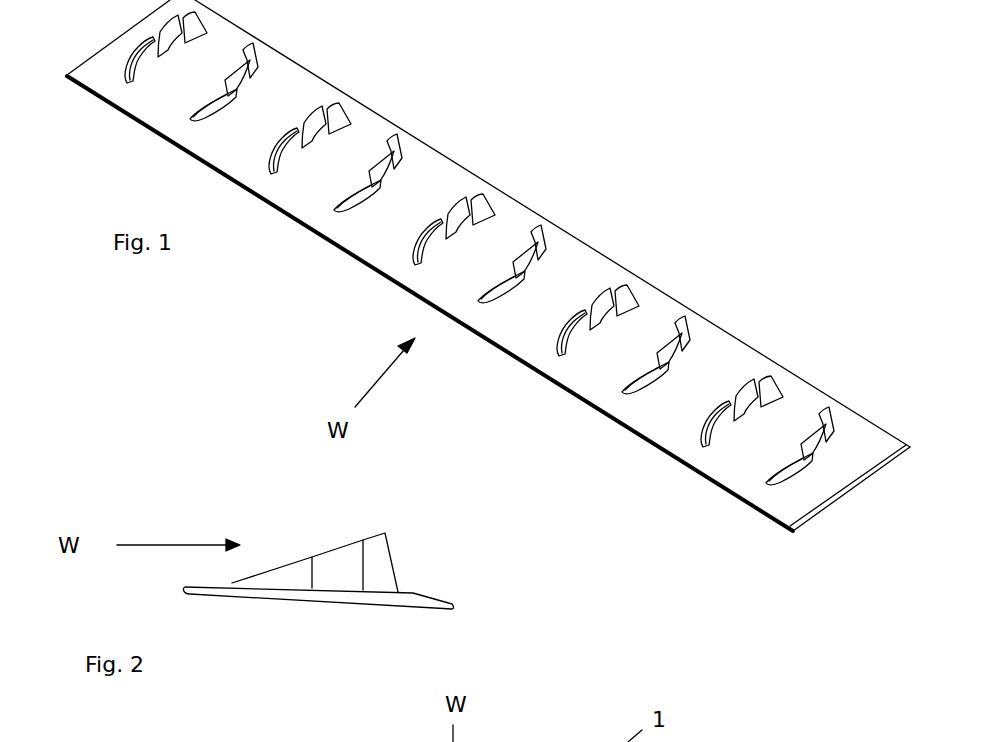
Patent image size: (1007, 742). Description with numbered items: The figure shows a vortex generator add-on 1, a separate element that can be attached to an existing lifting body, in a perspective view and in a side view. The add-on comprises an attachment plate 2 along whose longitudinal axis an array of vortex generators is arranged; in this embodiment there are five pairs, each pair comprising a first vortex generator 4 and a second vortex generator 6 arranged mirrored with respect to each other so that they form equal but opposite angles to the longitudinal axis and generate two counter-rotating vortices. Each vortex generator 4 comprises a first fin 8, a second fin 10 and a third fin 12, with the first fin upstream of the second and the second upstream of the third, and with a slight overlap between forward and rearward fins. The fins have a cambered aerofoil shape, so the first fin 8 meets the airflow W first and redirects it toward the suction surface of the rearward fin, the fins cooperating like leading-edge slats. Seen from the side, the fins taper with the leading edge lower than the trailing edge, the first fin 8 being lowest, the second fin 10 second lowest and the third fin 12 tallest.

In FIG. 1, the vortex generator add-on 1 is at (501, 265).
In FIG. 2, the vortex generator add-on 1 is at (357, 562).
In FIG. 1, the attachment plate 2 is at (740, 347).
In FIG. 2, the attachment plate 2 is at (440, 595).
In FIG. 1, the first vortex generator 4 is at (851, 428).
In FIG. 2, the first vortex generator 4 is at (338, 497).
In FIG. 1, the second vortex generator 6 is at (781, 366).
In FIG. 1, the first fin 8 is at (563, 330).
In FIG. 2, the first fin 8 is at (288, 572).
In FIG. 1, the second fin 10 is at (604, 294).
In FIG. 2, the second fin 10 is at (342, 553).
In FIG. 1, the third fin 12 is at (620, 287).
In FIG. 2, the third fin 12 is at (385, 565).